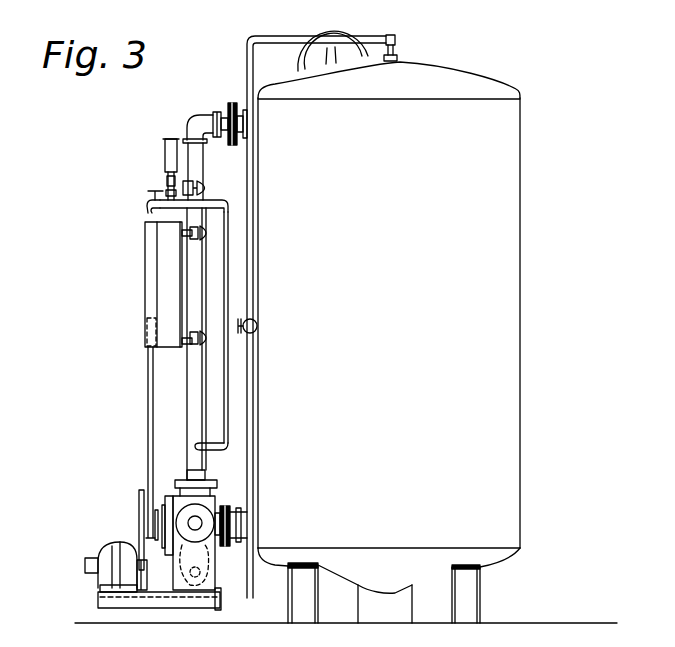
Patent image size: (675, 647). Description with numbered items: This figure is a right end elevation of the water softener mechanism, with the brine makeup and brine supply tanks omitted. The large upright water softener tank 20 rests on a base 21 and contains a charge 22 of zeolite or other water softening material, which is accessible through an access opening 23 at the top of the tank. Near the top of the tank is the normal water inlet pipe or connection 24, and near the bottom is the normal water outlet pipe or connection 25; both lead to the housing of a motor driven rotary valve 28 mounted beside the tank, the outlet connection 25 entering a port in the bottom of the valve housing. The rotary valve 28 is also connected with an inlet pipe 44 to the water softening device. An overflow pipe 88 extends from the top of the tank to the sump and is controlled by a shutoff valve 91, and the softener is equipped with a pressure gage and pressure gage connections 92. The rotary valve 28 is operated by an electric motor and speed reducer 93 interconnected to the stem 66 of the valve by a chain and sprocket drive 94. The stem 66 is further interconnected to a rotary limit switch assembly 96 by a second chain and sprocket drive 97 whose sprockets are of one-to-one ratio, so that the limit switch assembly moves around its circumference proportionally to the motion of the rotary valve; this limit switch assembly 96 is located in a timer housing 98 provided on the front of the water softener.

The water softener tank 20 is at (521, 461).
The base 21 is at (482, 605).
The charge of zeolite or other water softening material 22 is at (486, 286).
The access opening 23 is at (306, 57).
The normal water inlet pipe or connection 24 is at (247, 129).
The normal water outlet pipe or connection 25 is at (256, 531).
The motor driven rotary valve 28 is at (214, 494).
The inlet pipe 44 is at (232, 520).
The stem of the rotary valve 66 is at (140, 514).
The overflow pipe 88 is at (318, 33).
The shutoff valve 91 is at (258, 326).
The pressure gage and pressure gage connections 92 is at (165, 156).
The electric motor and speed reducer 93 is at (120, 556).
The chain and sprocket drive 94 is at (138, 541).
The rotary limit switch assembly 96 is at (180, 326).
The chain and sprocket drive 97 is at (150, 432).
The timer housing 98 is at (165, 266).